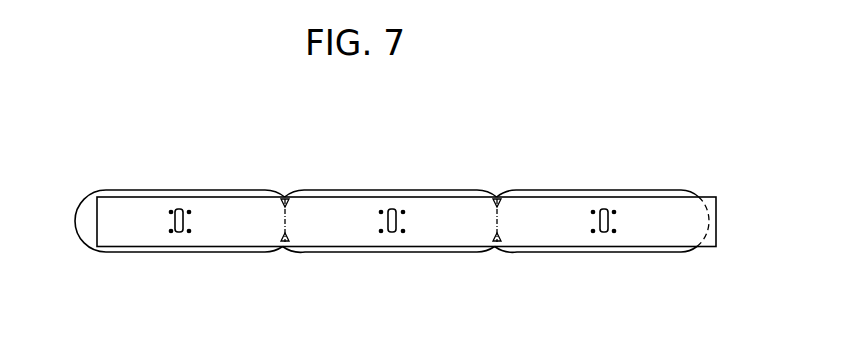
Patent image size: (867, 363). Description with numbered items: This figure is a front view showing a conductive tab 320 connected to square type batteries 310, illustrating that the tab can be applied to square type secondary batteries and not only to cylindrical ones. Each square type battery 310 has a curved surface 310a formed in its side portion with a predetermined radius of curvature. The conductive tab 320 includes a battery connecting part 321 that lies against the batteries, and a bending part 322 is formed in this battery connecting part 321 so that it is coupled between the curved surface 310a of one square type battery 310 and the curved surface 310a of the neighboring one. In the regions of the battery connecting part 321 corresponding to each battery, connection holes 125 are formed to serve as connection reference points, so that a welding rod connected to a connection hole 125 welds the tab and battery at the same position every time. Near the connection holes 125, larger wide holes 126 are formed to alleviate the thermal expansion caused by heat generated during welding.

The square type battery 310 is at (634, 190).
The curved surface 310a is at (84, 196).
The conductive tab 320 is at (713, 195).
The battery connecting part 321 is at (462, 233).
The bending part 322 is at (497, 200).
The connection hole 125 is at (169, 214).
The wide hole 126 is at (180, 208).